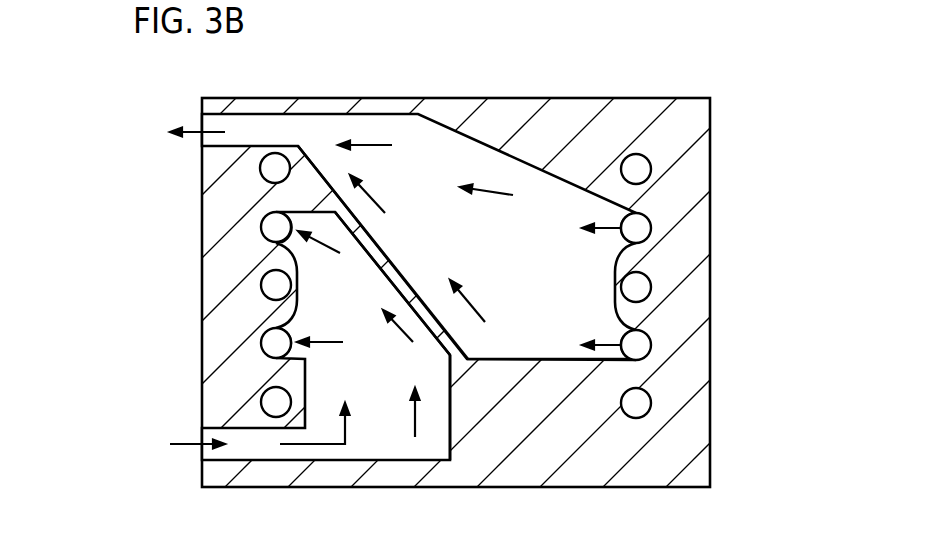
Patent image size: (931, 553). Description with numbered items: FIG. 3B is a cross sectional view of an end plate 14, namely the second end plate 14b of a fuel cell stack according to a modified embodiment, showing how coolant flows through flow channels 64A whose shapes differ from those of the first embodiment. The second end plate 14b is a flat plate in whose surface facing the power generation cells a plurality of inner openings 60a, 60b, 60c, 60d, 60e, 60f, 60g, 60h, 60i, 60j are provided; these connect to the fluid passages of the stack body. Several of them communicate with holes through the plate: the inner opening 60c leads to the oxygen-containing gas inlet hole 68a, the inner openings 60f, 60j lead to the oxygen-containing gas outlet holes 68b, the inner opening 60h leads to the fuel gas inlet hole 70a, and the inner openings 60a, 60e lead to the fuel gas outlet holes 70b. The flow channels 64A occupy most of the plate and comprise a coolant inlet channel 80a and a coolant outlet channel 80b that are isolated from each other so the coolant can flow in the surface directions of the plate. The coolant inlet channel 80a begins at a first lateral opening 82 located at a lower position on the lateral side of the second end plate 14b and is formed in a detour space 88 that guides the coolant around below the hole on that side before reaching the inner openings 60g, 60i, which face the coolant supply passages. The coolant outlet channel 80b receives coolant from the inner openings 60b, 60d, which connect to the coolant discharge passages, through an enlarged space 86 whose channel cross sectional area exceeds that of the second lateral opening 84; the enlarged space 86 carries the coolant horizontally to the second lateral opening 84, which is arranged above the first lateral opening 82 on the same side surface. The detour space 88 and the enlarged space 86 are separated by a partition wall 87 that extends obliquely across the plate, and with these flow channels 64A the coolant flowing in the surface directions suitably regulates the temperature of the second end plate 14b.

The second end plate 14b is at (322, 92).
The end plate 14 is at (465, 276).
The coolant inlet channel 80a is at (378, 438).
The coolant outlet channel 80b is at (413, 135).
The flow channels 64A is at (420, 295).
The first lateral opening 82 is at (200, 453).
The second lateral opening 84 is at (200, 118).
The enlarged space 86 is at (495, 358).
The partition wall 87 is at (382, 250).
The detour space 88 is at (450, 370).
The inner opening 60a is at (636, 169).
The inner opening 60b is at (636, 228).
The inner opening 60c is at (636, 287).
The inner opening 60d is at (636, 345).
The inner opening 60e is at (636, 403).
The inner opening 60f is at (270, 168).
The inner opening 60g is at (270, 227).
The inner opening 60h is at (270, 285).
The inner opening 60i is at (270, 343).
The inner opening 60j is at (270, 402).
The oxygen-containing gas inlet hole 68a is at (722, 287).
The oxygen-containing gas outlet hole 68b is at (188, 285).
The fuel gas inlet hole 70a is at (188, 278).
The fuel gas outlet hole 70b is at (722, 286).